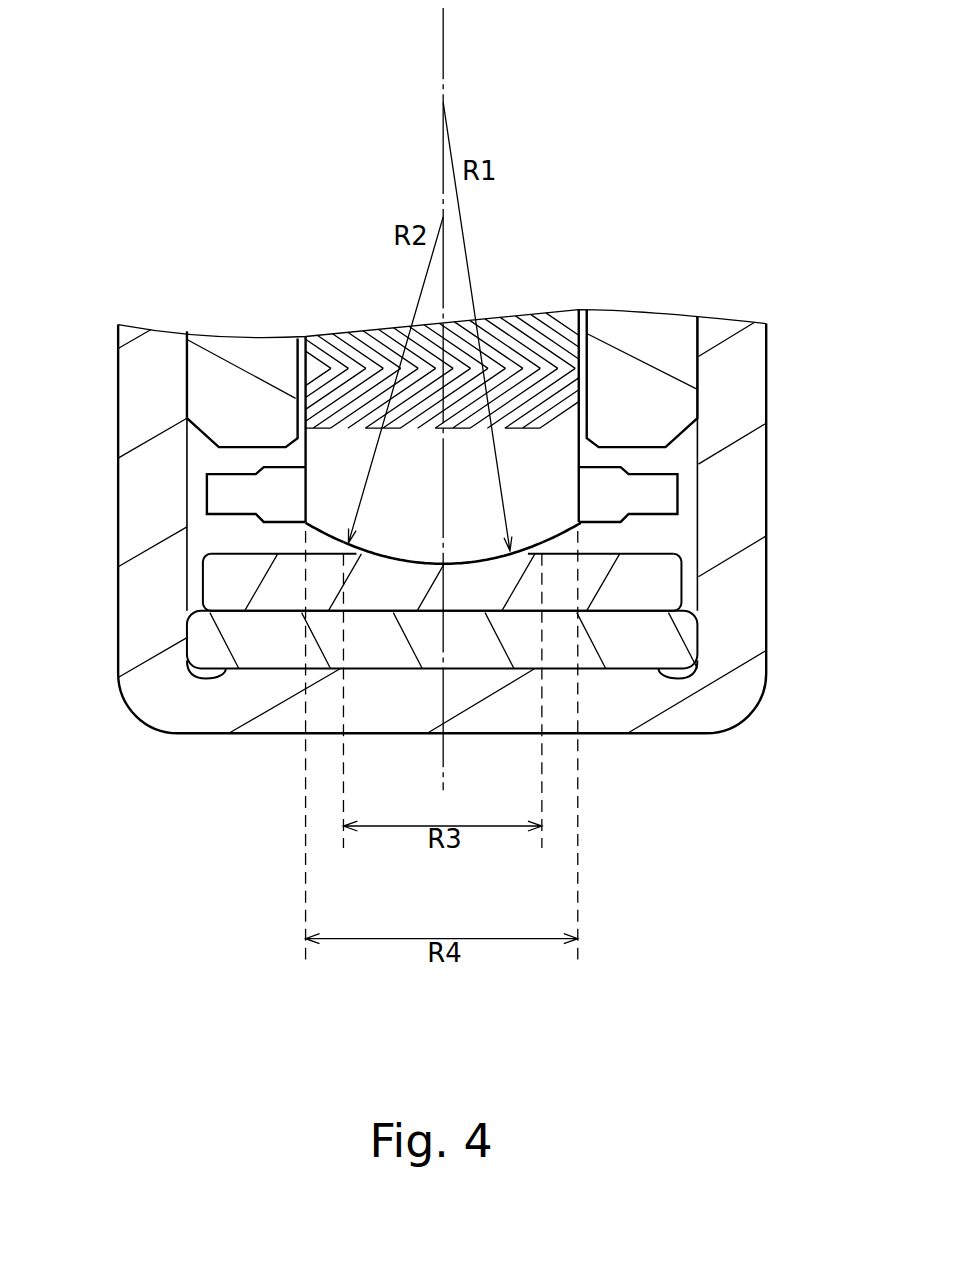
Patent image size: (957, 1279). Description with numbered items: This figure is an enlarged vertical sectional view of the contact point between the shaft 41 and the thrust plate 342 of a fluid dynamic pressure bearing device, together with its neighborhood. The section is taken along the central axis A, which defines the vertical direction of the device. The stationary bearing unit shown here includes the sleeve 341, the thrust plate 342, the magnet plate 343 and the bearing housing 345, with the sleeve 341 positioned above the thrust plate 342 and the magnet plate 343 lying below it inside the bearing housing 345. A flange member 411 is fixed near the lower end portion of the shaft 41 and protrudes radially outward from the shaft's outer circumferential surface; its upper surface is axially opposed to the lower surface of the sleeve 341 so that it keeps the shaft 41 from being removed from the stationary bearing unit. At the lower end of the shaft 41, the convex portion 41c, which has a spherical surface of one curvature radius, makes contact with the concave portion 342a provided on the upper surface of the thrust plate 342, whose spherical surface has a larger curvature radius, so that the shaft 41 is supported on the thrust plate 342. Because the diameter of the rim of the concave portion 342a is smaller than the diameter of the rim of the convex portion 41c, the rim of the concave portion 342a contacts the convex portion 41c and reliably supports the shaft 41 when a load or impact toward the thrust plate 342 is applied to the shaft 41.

The central axis A is at (442, 47).
The shaft 41 is at (556, 464).
The convex portion 41c is at (478, 573).
The flange member 411 is at (672, 495).
The sleeve 341 is at (210, 386).
The thrust plate 342 is at (218, 583).
The concave portion 342a is at (401, 544).
The magnet plate 343 is at (208, 639).
The bearing housing 345 is at (733, 400).